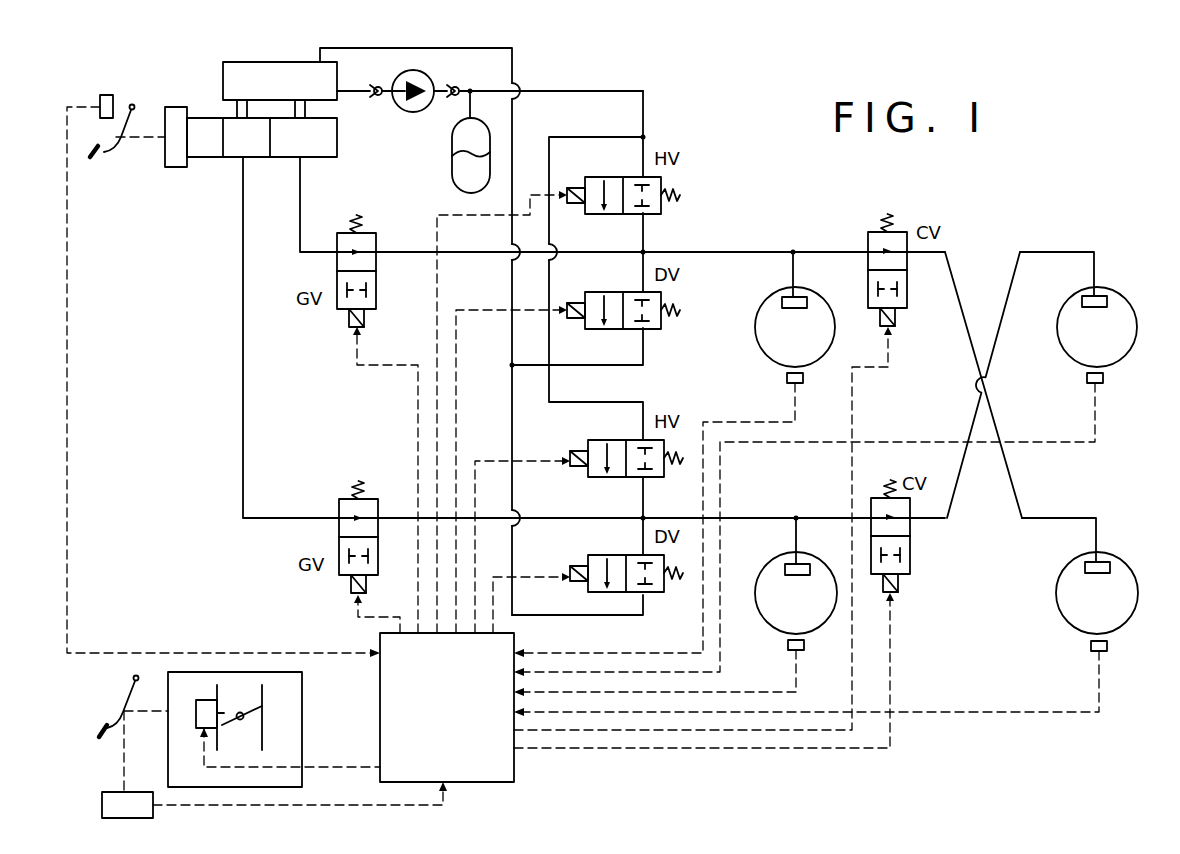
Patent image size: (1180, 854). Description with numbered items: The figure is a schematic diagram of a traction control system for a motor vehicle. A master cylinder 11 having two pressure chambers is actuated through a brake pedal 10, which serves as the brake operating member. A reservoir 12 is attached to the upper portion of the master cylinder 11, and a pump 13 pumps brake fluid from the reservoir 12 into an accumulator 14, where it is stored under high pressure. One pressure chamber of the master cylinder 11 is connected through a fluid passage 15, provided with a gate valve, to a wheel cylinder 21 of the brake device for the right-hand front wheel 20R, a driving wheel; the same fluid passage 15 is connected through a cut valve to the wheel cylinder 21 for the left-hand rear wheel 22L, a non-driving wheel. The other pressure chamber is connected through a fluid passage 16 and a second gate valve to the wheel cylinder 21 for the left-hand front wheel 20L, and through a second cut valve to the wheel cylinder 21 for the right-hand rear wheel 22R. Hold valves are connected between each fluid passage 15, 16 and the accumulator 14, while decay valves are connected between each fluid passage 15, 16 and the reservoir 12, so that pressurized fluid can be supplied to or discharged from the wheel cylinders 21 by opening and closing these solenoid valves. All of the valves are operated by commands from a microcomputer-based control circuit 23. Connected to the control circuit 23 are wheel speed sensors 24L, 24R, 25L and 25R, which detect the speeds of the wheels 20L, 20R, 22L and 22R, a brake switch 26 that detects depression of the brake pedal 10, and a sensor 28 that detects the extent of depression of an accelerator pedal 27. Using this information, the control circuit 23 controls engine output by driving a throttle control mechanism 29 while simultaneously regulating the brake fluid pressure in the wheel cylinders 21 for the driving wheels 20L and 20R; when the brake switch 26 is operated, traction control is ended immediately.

The brake pedal 10 is at (113, 160).
The master cylinder 11 is at (337, 135).
The reservoir 12 is at (223, 80).
The pump 13 is at (400, 74).
The accumulator 14 is at (452, 165).
The fluid passage 15 is at (485, 256).
The fluid passage 16 is at (497, 516).
The right-hand front wheel 20R is at (763, 360).
The left-hand front wheel 20L is at (760, 615).
The wheel cylinder 21 is at (782, 300).
The right-hand rear wheel 22R is at (1133, 348).
The left-hand rear wheel 22L is at (1132, 615).
The control circuit 23 is at (516, 633).
The wheel speed sensor 24R is at (803, 380).
The wheel speed sensor 24L is at (804, 647).
The wheel speed sensor 25R is at (1103, 380).
The wheel speed sensor 25L is at (1107, 648).
The brake switch 26 is at (105, 95).
The accelerator pedal 27 is at (120, 705).
The sensor 28 is at (110, 790).
The throttle control mechanism 29 is at (204, 698).